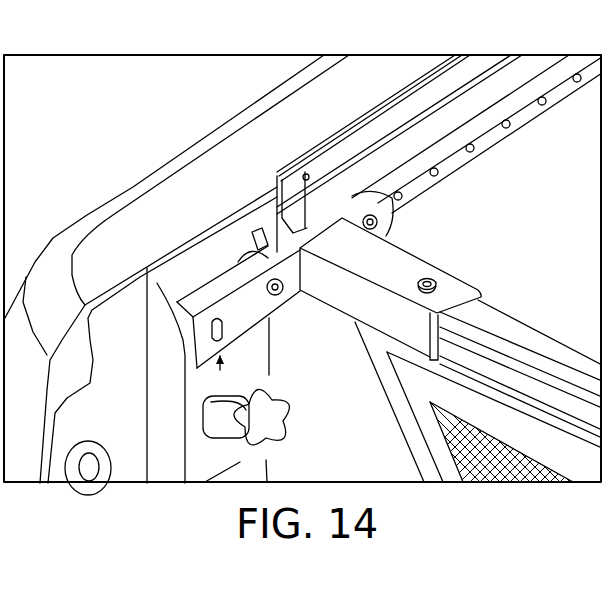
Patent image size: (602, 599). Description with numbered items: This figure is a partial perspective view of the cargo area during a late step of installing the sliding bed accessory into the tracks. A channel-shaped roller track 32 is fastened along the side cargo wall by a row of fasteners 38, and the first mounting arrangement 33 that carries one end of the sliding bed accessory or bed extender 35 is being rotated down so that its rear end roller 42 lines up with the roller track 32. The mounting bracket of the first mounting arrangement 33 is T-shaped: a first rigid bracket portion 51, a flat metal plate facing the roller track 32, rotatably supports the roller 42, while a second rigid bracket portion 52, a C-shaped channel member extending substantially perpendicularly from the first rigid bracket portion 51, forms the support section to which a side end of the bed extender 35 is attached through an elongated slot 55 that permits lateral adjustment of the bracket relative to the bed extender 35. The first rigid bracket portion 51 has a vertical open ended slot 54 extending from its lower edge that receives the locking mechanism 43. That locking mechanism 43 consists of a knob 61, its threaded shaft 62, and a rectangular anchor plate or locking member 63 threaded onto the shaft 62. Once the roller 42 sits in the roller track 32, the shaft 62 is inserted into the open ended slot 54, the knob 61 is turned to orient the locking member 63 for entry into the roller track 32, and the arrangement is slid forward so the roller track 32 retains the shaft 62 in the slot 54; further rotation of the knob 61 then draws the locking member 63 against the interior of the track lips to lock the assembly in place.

The roller track 32 is at (437, 122).
The first mounting arrangement 33 is at (414, 275).
The sliding bed accessory or bed extender 35 is at (548, 318).
The fastener 38 is at (305, 173).
The roller 42 is at (252, 255).
The locking mechanism 43 is at (243, 400).
The first rigid bracket portion 51 is at (246, 284).
The second rigid bracket portion 52 is at (430, 265).
The vertical open ended slot 54 is at (222, 333).
The elongated slot 55 is at (433, 282).
The knob 61 is at (288, 444).
The threaded shaft 62 is at (270, 372).
The anchor plate or locking member 63 is at (200, 416).